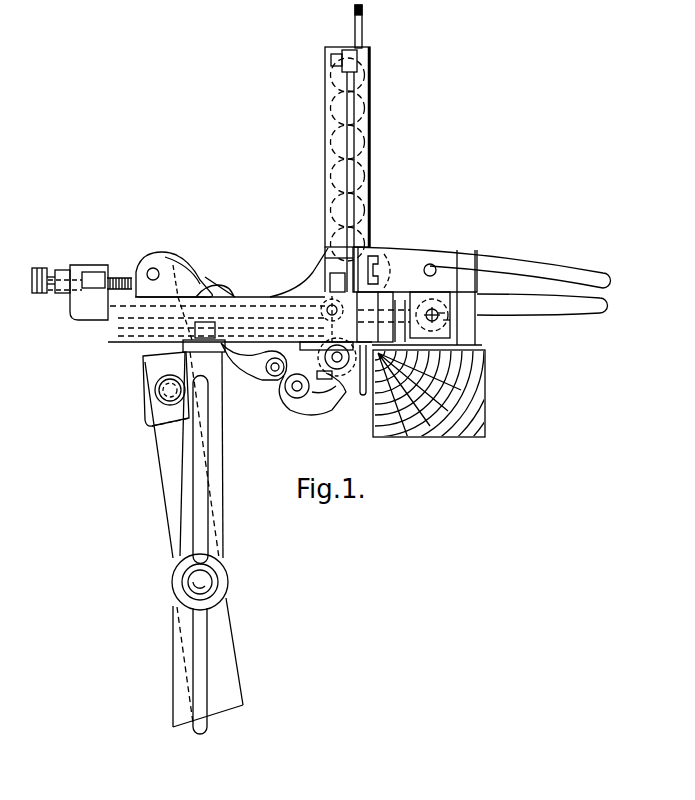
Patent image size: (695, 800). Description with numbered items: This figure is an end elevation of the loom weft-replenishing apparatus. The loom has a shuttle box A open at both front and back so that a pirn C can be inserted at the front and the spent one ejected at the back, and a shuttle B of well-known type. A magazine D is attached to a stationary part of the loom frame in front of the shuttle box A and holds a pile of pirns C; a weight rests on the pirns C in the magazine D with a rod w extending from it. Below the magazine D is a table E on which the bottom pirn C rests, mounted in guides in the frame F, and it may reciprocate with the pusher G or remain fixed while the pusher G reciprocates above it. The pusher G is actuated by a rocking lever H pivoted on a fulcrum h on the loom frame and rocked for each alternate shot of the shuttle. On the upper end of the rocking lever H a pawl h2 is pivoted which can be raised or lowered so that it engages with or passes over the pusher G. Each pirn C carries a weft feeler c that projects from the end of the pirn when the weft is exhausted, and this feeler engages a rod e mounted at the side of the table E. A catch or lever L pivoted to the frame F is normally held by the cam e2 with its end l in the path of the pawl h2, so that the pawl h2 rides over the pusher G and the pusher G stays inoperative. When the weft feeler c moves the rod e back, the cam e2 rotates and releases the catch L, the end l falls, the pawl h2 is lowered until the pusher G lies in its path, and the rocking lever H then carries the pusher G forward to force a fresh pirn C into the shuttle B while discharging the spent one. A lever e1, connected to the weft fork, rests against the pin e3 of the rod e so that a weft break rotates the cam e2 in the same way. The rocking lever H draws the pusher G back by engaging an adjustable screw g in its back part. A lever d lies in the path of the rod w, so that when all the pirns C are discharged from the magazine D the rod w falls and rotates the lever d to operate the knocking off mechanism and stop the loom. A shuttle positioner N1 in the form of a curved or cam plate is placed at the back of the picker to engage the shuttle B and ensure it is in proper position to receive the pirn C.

The rod w is at (362, 37).
The pirn C is at (371, 128).
The magazine D is at (371, 171).
The shuttle box A is at (432, 300).
The shuttle positioner N1 is at (415, 269).
The shuttle B is at (434, 297).
The weft feeler c is at (440, 313).
The rod e is at (445, 320).
The frame F is at (126, 318).
The pusher G is at (148, 295).
The adjustable screw g is at (44, 293).
The pawl h2 is at (187, 266).
The end of catch or lever L l is at (220, 280).
The pin e3 is at (327, 308).
The lever e1 is at (321, 303).
The cam e2 is at (328, 358).
The catch or lever L is at (257, 363).
The lever d is at (320, 404).
The table E is at (130, 348).
The rocking lever H is at (228, 670).
The fulcrum h is at (205, 582).